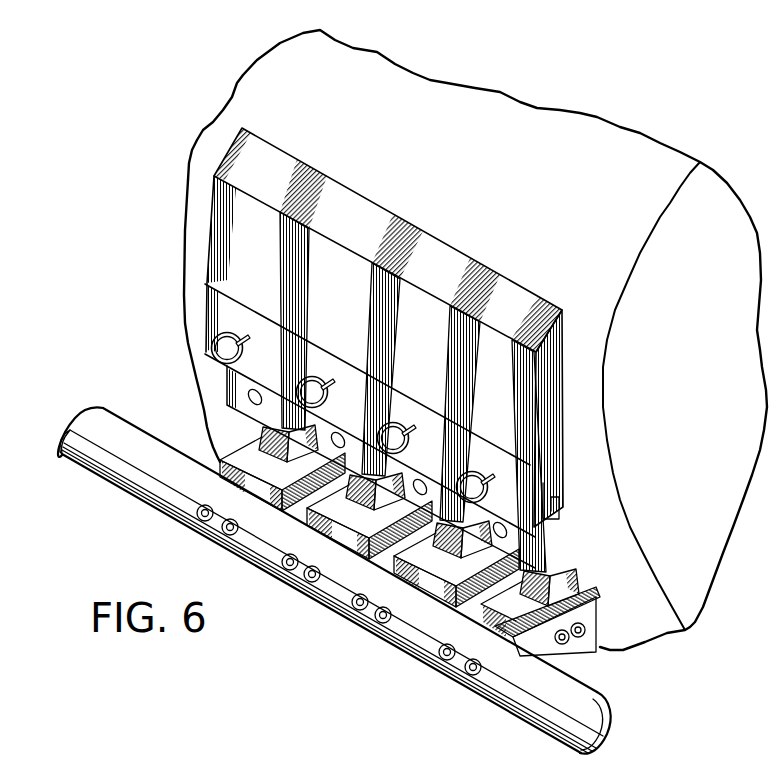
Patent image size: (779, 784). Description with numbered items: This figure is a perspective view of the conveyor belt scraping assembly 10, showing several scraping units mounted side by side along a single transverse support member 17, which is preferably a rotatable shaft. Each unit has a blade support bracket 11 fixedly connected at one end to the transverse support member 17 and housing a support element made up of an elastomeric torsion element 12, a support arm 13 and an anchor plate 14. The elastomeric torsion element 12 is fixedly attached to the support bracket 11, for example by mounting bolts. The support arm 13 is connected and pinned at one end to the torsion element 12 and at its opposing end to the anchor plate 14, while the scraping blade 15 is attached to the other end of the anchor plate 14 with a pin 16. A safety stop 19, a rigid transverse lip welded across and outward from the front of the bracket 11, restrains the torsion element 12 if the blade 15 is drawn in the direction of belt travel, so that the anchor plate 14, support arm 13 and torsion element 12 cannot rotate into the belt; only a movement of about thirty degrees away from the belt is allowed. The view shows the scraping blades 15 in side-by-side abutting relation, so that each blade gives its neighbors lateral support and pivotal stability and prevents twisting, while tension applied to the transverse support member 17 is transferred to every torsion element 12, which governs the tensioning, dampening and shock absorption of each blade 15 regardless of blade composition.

The conveyor belt scraping assembly 10 is at (290, 618).
The blade support bracket 11 is at (232, 460).
The elastomeric torsion element 12 is at (280, 492).
The support arm 13 is at (262, 410).
The anchor plate 14 is at (265, 433).
The scraping blade 15 is at (422, 248).
The pin 16 is at (240, 335).
The transverse support member 17 is at (140, 493).
The safety stop 19 is at (583, 586).